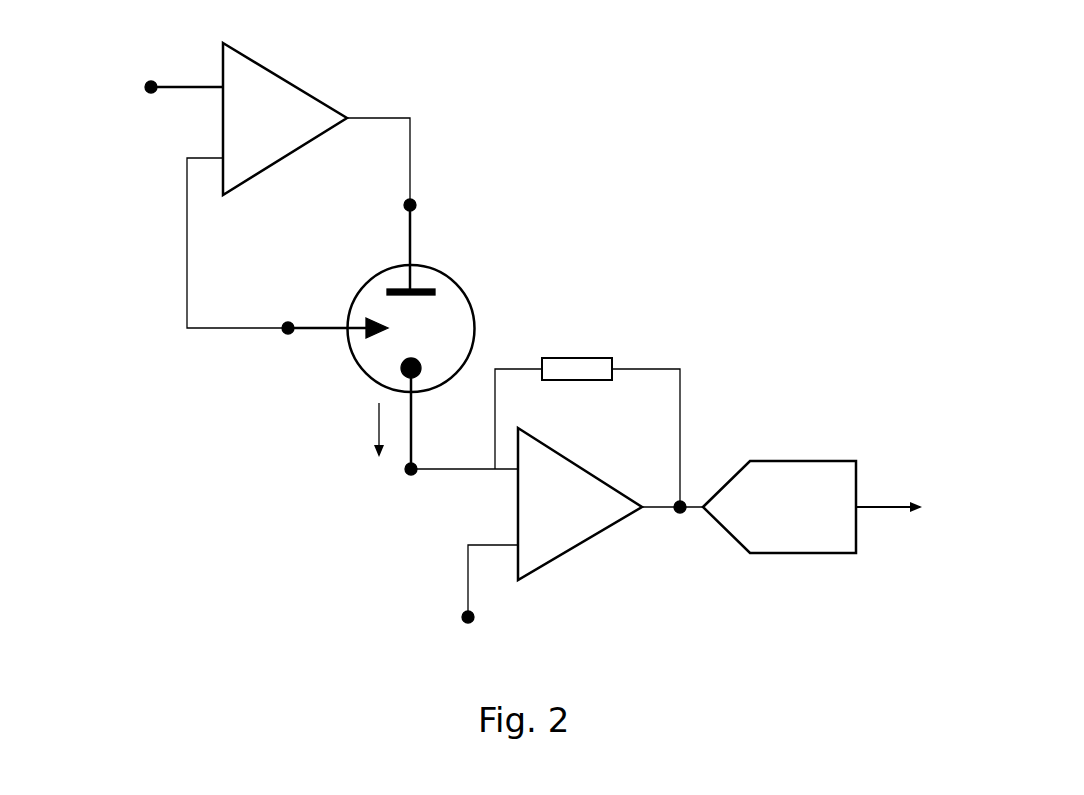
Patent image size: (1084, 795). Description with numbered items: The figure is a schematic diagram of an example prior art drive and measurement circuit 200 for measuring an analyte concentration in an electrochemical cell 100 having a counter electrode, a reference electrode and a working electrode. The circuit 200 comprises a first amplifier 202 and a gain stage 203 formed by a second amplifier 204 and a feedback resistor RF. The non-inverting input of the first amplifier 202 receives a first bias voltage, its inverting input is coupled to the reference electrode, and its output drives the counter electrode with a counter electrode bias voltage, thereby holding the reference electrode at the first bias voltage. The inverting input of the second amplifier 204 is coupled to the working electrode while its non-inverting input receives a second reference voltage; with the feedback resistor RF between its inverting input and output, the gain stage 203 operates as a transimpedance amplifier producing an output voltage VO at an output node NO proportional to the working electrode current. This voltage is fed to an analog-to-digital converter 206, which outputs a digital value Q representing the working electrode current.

The drive and measurement circuit 200 is at (650, 226).
The first amplifier 202 is at (316, 99).
The electrochemical cell 100 is at (462, 291).
The gain stage 203 is at (636, 572).
The second amplifier 204 is at (608, 483).
The analog-to-digital converter 206 is at (790, 461).